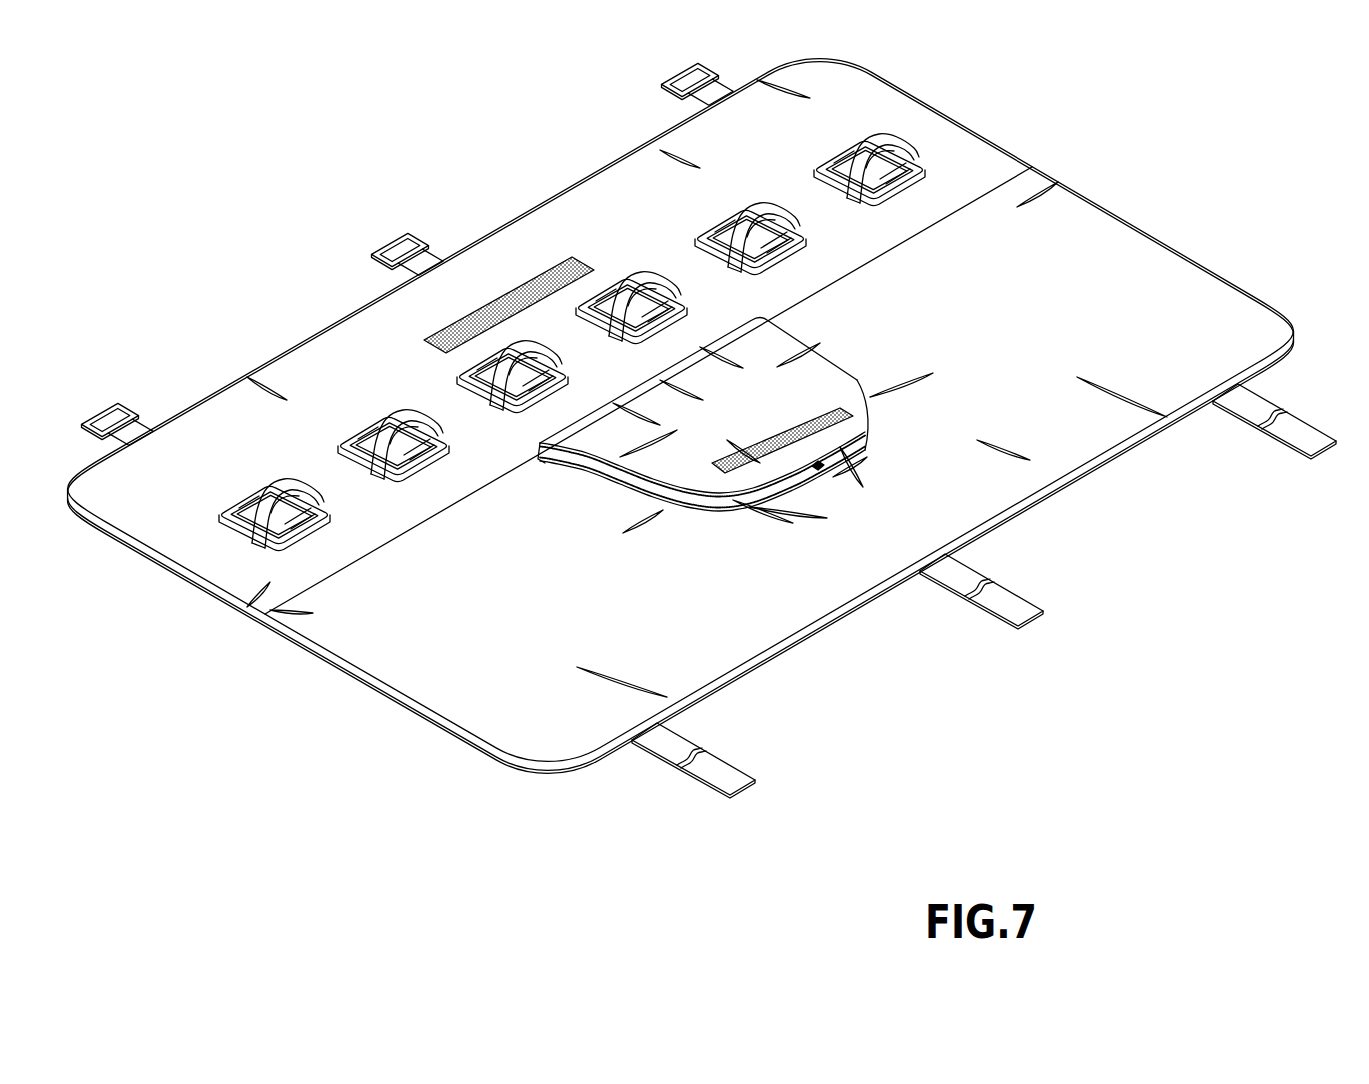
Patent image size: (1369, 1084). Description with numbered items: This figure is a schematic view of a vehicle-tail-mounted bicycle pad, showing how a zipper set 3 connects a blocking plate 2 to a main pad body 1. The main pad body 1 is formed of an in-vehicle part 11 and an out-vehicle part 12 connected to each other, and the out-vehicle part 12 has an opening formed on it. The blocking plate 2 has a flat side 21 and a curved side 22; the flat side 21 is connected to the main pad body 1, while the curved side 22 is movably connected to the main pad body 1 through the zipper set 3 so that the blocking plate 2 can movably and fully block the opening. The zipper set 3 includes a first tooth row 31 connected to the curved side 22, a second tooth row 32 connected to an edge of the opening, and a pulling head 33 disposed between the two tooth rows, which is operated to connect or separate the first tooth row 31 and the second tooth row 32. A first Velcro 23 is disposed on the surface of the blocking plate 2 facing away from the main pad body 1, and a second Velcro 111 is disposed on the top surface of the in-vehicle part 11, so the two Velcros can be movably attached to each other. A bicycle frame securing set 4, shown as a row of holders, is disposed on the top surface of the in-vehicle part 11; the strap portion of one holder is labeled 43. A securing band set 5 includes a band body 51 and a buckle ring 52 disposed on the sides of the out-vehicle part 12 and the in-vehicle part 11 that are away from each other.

The main pad body 1 is at (1110, 165).
The in-vehicle part 11 is at (960, 143).
The out-vehicle part 12 is at (1147, 250).
The second Velcro 111 is at (572, 265).
The blocking plate 2 is at (683, 449).
The flat side 21 is at (536, 421).
The curved side 22 is at (702, 458).
The first Velcro 23 is at (830, 400).
The zipper set 3 is at (748, 571).
The first tooth row 31 is at (735, 495).
The second tooth row 32 is at (743, 500).
The pulling head 33 is at (817, 463).
The bicycle frame securing set 4 is at (572, 327).
The holding strap loop 43 is at (773, 206).
The securing band set 5 is at (709, 430).
The band body 51 is at (750, 770).
The buckle ring 52 is at (372, 244).